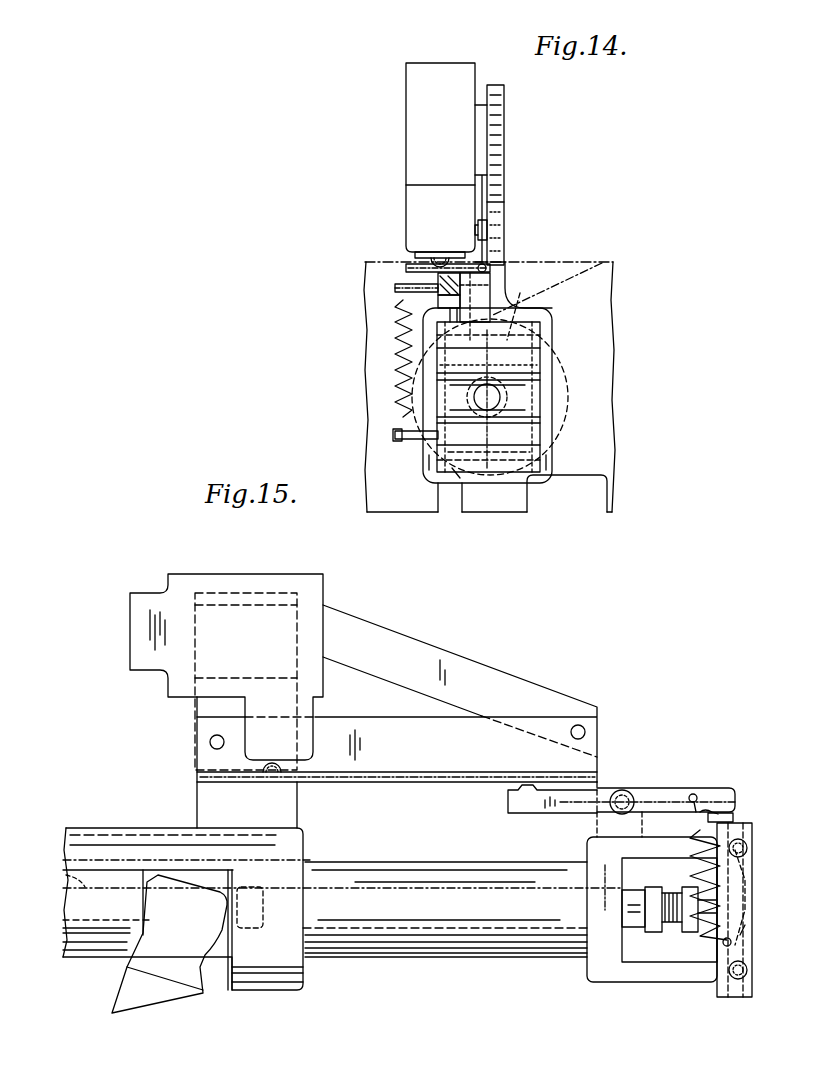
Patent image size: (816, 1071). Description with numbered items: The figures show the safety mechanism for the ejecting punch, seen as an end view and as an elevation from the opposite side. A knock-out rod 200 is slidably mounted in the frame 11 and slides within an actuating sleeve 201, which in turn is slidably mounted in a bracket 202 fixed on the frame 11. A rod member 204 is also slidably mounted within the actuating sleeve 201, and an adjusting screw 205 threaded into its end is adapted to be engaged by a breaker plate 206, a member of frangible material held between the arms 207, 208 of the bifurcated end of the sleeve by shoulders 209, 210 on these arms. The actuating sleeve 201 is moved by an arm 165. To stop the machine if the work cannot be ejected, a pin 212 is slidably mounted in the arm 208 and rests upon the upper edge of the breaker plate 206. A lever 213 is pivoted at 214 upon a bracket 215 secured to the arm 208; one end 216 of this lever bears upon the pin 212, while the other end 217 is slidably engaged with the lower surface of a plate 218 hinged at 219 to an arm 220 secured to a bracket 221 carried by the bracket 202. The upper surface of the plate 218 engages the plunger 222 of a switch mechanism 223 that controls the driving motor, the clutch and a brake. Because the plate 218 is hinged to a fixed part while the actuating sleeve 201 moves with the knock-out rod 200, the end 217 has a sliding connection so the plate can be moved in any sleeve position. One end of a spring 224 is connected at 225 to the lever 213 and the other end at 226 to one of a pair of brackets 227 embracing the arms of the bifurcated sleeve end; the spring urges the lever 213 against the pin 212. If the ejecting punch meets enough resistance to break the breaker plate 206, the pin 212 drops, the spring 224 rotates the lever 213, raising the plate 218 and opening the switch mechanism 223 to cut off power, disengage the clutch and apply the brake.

In FIG. 14, the frame 11 is at (572, 263).
In FIG. 14, the arm 165 is at (445, 497).
In FIG. 15, the arm 165 is at (130, 997).
In FIG. 15, the knock-out rod 200 is at (70, 878).
In FIG. 14, the actuating sleeve 201 is at (540, 440).
In FIG. 15, the actuating sleeve 201 is at (380, 862).
In FIG. 14, the bracket 202 is at (553, 293).
In FIG. 15, the bracket 202 is at (115, 820).
In FIG. 14, the rod member 204 is at (505, 397).
In FIG. 15, the rod member 204 is at (635, 920).
In FIG. 14, the adjusting screw 205 is at (505, 447).
In FIG. 15, the adjusting screw 205 is at (690, 935).
In FIG. 14, the breaker plate 206 is at (520, 387).
In FIG. 15, the breaker plate 206 is at (712, 942).
In FIG. 14, the arm 207 is at (452, 470).
In FIG. 15, the arm 207 is at (657, 973).
In FIG. 14, the arm 208 is at (527, 337).
In FIG. 15, the arm 208 is at (648, 842).
In FIG. 14, the shoulder 209 is at (530, 478).
In FIG. 15, the shoulder 209 is at (740, 993).
In FIG. 14, the shoulder 210 is at (521, 301).
In FIG. 15, the shoulder 210 is at (765, 880).
In FIG. 14, the pin 212 is at (452, 305).
In FIG. 15, the pin 212 is at (733, 817).
In FIG. 14, the lever 213 is at (450, 300).
In FIG. 15, the lever 213 is at (660, 800).
In FIG. 14, the pivot 214 is at (467, 254).
In FIG. 15, the pivot 214 is at (622, 790).
In FIG. 14, the bracket 215 is at (458, 370).
In FIG. 15, the bracket 215 is at (598, 826).
In FIG. 14, the lever end 216 is at (440, 285).
In FIG. 15, the lever end 216 is at (722, 805).
In FIG. 15, the lever end 217 is at (518, 786).
In FIG. 14, the plate 218 is at (440, 268).
In FIG. 15, the plate 218 is at (437, 788).
In FIG. 14, the hinge 219 is at (485, 267).
In FIG. 14, the arm 220 is at (483, 215).
In FIG. 15, the arm 220 is at (440, 756).
In FIG. 14, the bracket 221 is at (502, 178).
In FIG. 15, the bracket 221 is at (215, 800).
In FIG. 14, the plunger 222 is at (435, 262).
In FIG. 15, the plunger 222 is at (283, 782).
In FIG. 14, the switch mechanism 223 is at (412, 160).
In FIG. 15, the switch mechanism 223 is at (323, 690).
In FIG. 14, the spring 224 is at (395, 375).
In FIG. 15, the spring 224 is at (703, 830).
In FIG. 14, the spring connection 225 is at (395, 288).
In FIG. 15, the spring connection 225 is at (694, 793).
In FIG. 14, the spring connection 226 is at (395, 435).
In FIG. 15, the spring connection 226 is at (731, 942).
In FIG. 14, the brackets 227 is at (430, 458).
In FIG. 15, the brackets 227 is at (745, 930).